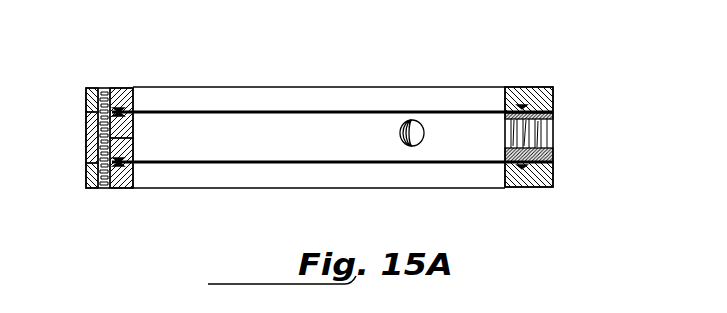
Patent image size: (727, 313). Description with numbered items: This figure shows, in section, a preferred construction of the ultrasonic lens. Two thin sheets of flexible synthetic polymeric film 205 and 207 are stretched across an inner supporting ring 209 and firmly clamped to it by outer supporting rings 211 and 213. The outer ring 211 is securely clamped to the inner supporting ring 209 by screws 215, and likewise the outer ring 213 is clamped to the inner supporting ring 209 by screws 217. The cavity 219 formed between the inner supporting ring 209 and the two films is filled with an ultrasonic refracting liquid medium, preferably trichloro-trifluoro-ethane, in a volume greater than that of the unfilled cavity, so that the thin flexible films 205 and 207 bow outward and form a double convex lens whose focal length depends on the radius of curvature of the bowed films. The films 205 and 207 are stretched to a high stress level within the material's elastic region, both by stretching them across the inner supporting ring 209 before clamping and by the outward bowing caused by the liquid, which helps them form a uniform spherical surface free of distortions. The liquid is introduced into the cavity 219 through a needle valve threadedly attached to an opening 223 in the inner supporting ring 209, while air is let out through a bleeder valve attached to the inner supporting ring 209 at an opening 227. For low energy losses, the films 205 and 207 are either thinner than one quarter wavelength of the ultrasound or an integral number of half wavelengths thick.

The thin sheet of flexible synthetic polymeric film 205 is at (325, 110).
The thin sheet of flexible synthetic polymeric film 207 is at (460, 165).
The inner supporting ring 209 is at (85, 137).
The outer supporting ring 211 is at (83, 100).
The outer supporting ring 213 is at (83, 168).
The screws 215 is at (115, 88).
The screws 217 is at (113, 188).
The cavity 219 is at (283, 143).
The opening 223 is at (547, 135).
The opening 227 is at (398, 133).